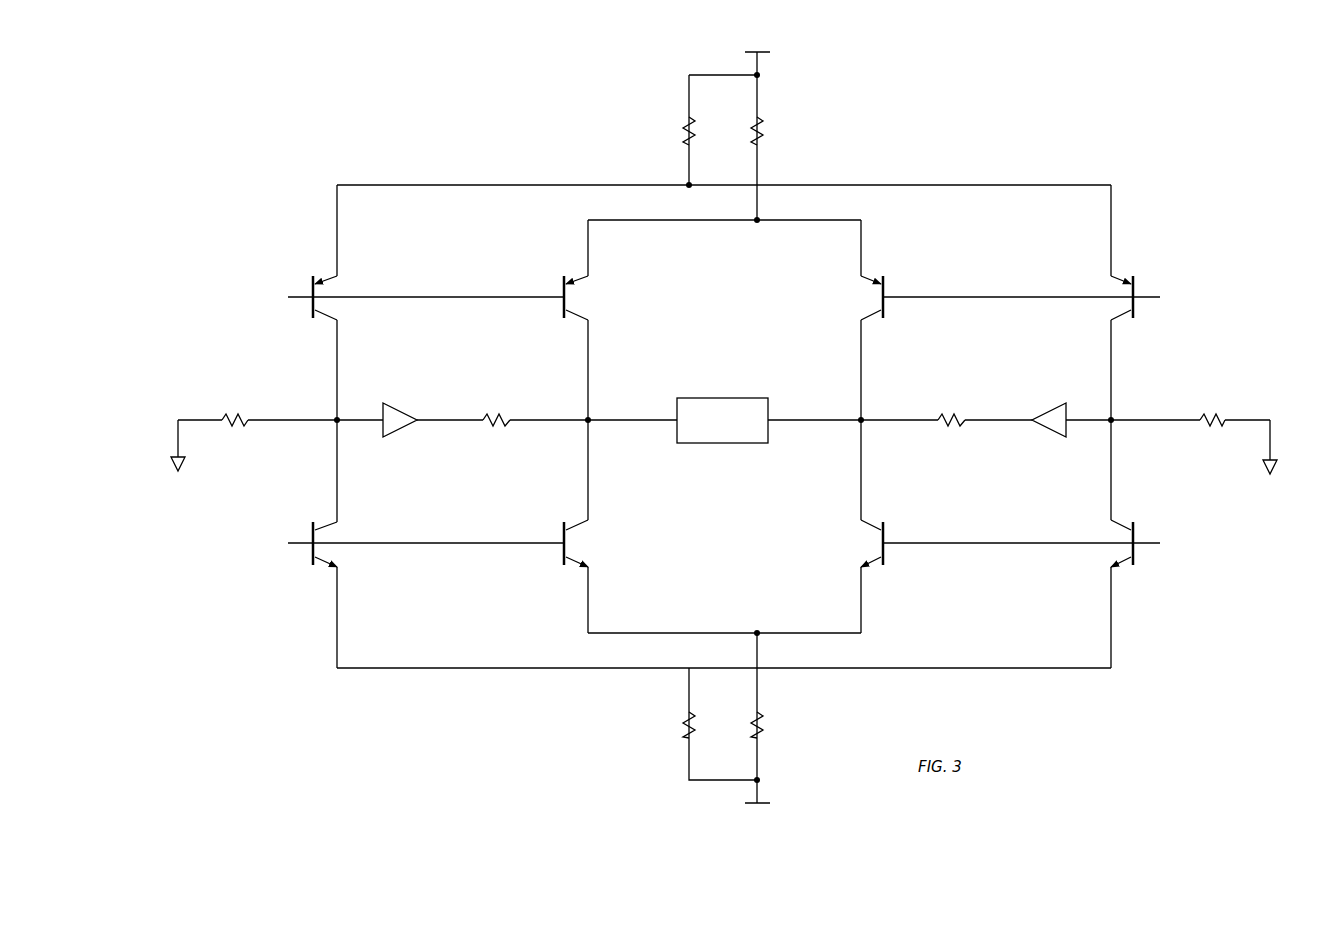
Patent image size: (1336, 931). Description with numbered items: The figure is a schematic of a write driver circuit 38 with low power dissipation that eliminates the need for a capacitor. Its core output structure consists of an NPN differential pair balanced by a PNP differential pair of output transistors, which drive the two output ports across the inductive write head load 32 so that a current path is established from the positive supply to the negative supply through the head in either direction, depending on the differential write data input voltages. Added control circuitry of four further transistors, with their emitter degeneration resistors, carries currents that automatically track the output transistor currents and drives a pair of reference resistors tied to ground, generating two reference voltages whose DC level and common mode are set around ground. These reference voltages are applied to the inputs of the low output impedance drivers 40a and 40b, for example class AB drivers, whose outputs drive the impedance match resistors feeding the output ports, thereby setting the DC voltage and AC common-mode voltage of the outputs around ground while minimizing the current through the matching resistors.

The write driver circuit 38 is at (560, 110).
The inductive write head load 32 is at (733, 443).
The low output impedance driver 40a is at (400, 433).
The low output impedance driver 40b is at (1047, 437).